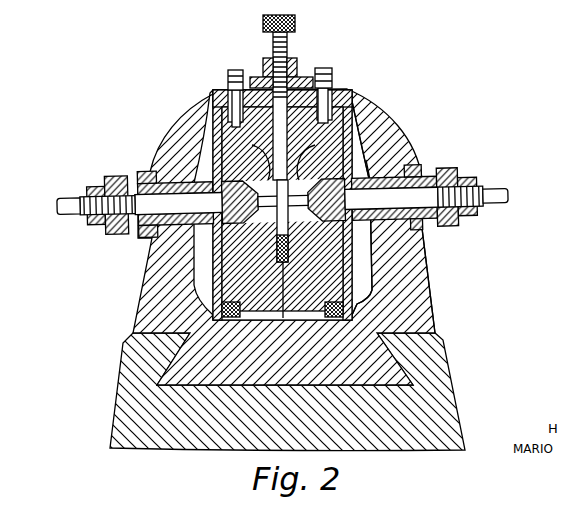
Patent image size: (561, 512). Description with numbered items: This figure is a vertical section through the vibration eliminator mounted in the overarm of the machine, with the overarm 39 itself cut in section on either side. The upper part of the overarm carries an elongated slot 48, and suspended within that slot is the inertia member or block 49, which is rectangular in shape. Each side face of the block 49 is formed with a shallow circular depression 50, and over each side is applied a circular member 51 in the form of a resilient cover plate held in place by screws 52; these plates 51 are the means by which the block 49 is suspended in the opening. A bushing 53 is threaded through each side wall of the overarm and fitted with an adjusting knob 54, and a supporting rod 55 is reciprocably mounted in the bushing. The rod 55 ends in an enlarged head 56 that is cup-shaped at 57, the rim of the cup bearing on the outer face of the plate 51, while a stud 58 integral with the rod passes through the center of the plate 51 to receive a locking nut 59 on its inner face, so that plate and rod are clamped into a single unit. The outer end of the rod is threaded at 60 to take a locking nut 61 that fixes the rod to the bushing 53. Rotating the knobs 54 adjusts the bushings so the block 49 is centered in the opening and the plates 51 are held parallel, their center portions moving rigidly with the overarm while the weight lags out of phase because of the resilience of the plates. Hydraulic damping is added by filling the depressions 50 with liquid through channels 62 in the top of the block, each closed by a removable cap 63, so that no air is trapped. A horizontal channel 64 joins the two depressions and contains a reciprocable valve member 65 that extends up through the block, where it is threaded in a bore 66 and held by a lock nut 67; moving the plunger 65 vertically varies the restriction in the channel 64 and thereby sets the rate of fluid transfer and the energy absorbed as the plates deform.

The housing 39 is at (395, 133).
The elongated slot 48 is at (343, 287).
The inertia member 49 is at (340, 303).
The circular depressions 50 is at (346, 193).
The circular members 51 is at (347, 275).
The screws 52 is at (336, 90).
The bushing 53 is at (432, 176).
The adjusting knob 54 is at (448, 167).
The supporting rod 55 is at (425, 222).
The enlarged head 56 is at (372, 240).
The cup-shaped portion 57 is at (373, 268).
The stud 58 is at (326, 183).
The locking nut 59 is at (334, 160).
The threaded outer end 60 is at (487, 186).
The locking nut 61 is at (473, 180).
The channels 62 is at (360, 110).
The removable caps 63 is at (325, 70).
The horizontal channel 64 is at (262, 176).
The valve member 65 is at (258, 160).
The bore 66 is at (300, 72).
The lock nut 67 is at (263, 64).